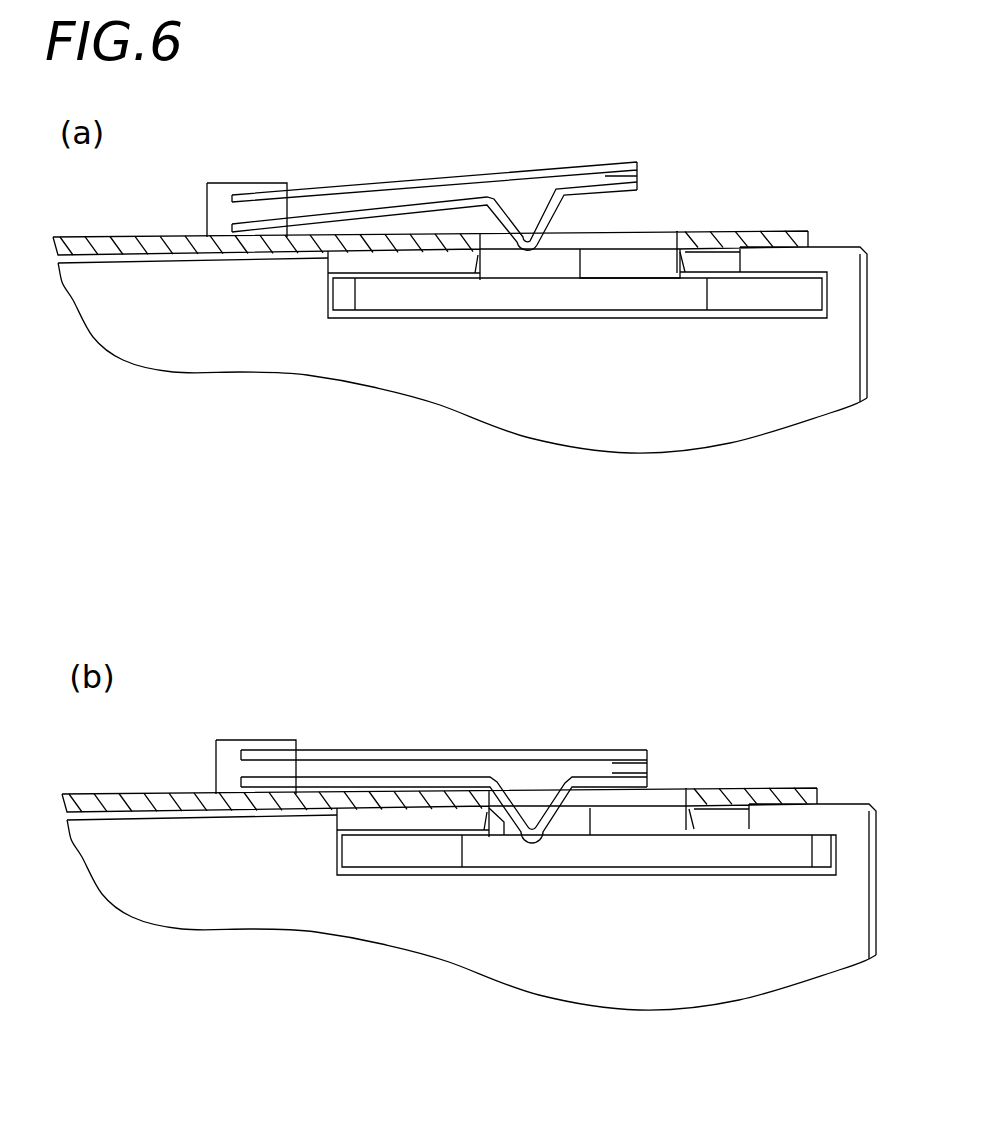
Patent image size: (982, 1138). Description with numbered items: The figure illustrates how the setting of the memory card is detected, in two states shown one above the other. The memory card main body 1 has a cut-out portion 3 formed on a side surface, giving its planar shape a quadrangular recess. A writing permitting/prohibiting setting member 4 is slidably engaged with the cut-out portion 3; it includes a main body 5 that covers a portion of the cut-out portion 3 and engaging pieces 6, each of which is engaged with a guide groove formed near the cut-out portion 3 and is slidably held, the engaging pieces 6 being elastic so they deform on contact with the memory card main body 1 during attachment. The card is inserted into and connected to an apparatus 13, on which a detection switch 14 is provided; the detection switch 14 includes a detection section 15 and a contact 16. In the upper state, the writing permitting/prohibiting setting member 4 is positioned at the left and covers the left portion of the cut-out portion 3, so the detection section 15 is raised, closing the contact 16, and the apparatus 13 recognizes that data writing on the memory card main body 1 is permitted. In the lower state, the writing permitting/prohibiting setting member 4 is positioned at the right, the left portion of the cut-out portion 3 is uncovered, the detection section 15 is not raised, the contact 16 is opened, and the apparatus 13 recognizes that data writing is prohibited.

The memory card main body 1 is at (850, 246).
The cut-out portion 3 is at (641, 247).
The writing permitting/prohibiting setting member 4 is at (582, 683).
The main body 5 is at (520, 267).
The engaging pieces 6 is at (427, 302).
The apparatus 13 is at (157, 237).
The detection switch 14 is at (439, 447).
The detection section 15 is at (532, 243).
The contact 16 is at (613, 160).